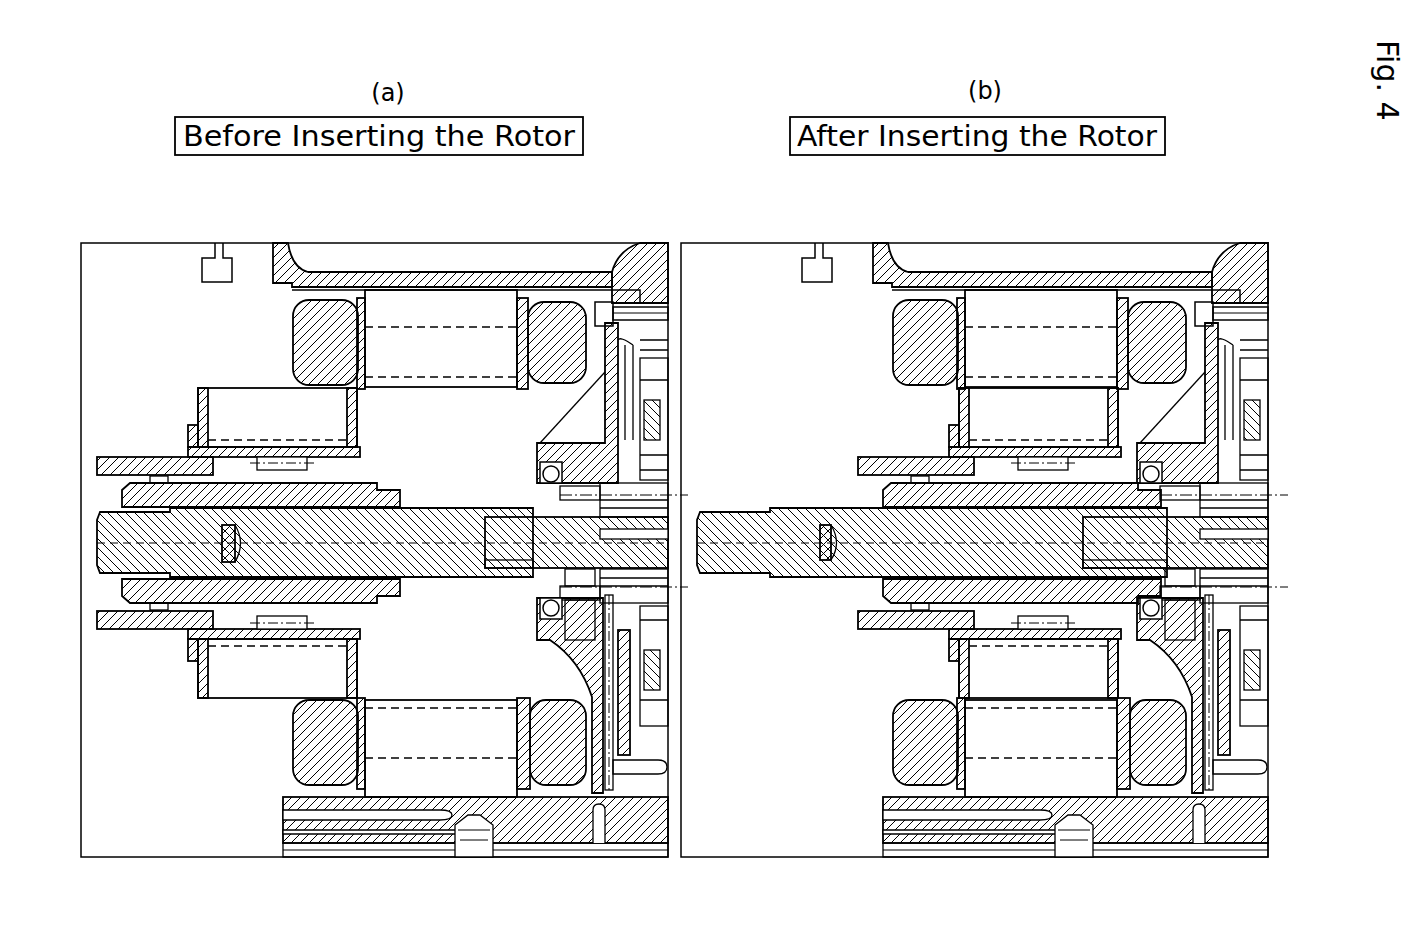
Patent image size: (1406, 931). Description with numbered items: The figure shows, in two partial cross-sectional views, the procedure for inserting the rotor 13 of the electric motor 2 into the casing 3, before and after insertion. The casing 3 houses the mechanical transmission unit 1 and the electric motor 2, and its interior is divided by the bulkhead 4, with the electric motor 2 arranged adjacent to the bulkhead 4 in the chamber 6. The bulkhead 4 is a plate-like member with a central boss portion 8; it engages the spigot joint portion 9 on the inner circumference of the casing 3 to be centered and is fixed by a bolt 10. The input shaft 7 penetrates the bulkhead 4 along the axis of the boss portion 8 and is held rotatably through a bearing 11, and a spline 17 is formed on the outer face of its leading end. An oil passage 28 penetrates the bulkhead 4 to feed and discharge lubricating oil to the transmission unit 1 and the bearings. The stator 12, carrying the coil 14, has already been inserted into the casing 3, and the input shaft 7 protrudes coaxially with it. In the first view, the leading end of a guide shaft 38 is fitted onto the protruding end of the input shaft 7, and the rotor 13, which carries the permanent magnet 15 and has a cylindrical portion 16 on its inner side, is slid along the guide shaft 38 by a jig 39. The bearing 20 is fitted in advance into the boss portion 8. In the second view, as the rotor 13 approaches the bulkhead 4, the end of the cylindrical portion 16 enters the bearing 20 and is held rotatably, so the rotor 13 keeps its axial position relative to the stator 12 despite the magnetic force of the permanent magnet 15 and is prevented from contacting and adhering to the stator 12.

The mechanical transmission unit 1 is at (650, 334).
The electric motor 2 is at (410, 287).
The casing 3 is at (500, 287).
The bulkhead 4 is at (603, 395).
The chamber 6 is at (538, 288).
The input shaft 7 is at (552, 522).
The boss portion 8 is at (565, 632).
The spigot joint portion 9 is at (598, 300).
The bolt 10 is at (648, 300).
The bearing 11 is at (550, 578).
The stator 12 is at (442, 298).
The rotor 13 is at (208, 382).
The coil 14 is at (302, 330).
The permanent magnet 15 is at (270, 405).
The cylindrical portion 16 is at (378, 490).
The spline 17 is at (488, 562).
The bearing 20 is at (540, 470).
The oil passage 28 is at (612, 690).
The guide shaft 38 is at (437, 525).
The jig 39 is at (133, 465).